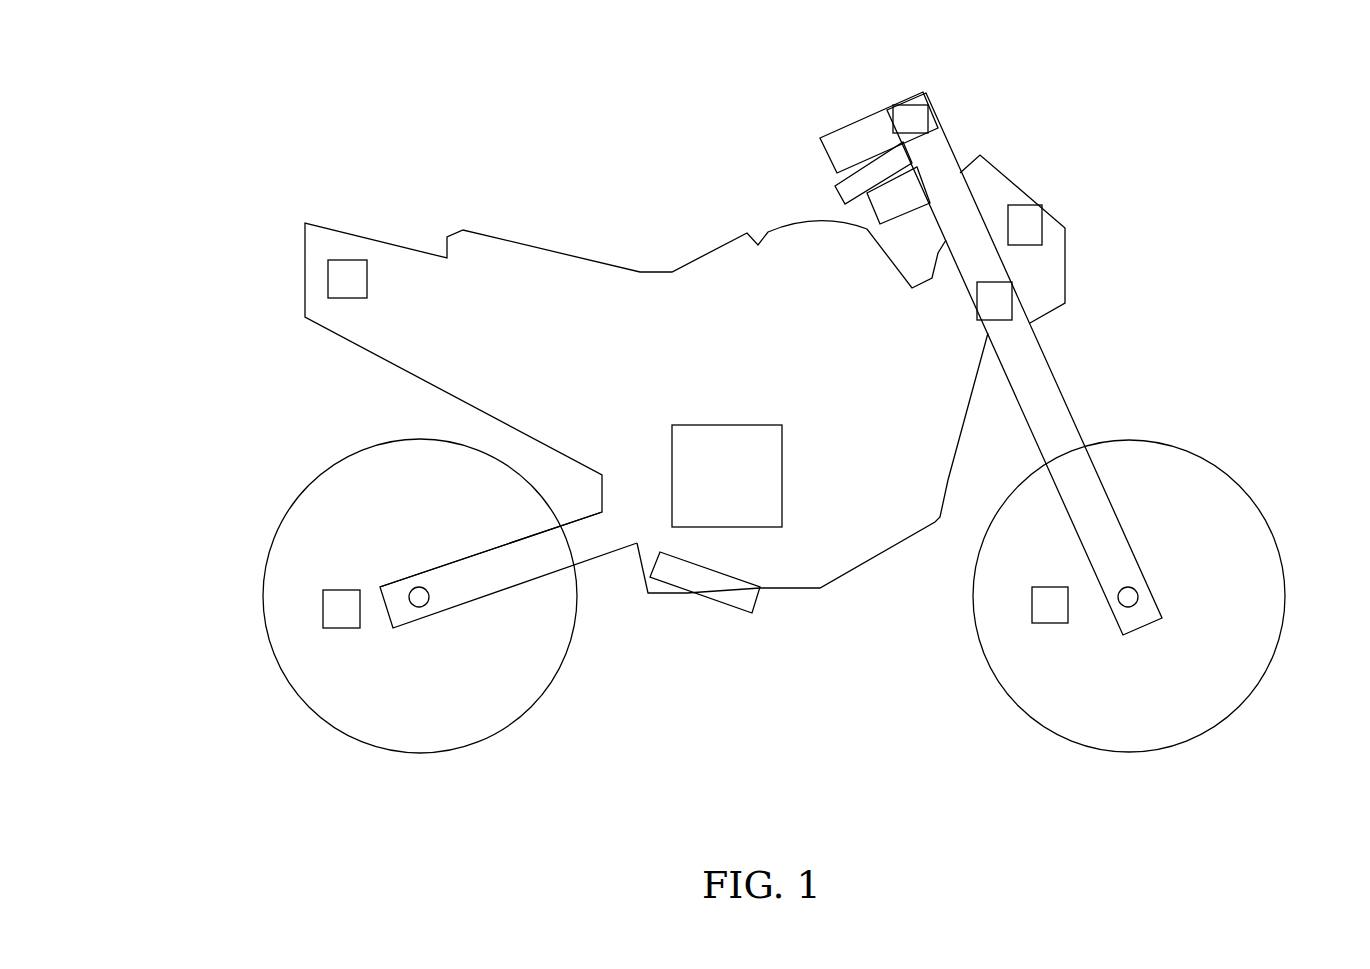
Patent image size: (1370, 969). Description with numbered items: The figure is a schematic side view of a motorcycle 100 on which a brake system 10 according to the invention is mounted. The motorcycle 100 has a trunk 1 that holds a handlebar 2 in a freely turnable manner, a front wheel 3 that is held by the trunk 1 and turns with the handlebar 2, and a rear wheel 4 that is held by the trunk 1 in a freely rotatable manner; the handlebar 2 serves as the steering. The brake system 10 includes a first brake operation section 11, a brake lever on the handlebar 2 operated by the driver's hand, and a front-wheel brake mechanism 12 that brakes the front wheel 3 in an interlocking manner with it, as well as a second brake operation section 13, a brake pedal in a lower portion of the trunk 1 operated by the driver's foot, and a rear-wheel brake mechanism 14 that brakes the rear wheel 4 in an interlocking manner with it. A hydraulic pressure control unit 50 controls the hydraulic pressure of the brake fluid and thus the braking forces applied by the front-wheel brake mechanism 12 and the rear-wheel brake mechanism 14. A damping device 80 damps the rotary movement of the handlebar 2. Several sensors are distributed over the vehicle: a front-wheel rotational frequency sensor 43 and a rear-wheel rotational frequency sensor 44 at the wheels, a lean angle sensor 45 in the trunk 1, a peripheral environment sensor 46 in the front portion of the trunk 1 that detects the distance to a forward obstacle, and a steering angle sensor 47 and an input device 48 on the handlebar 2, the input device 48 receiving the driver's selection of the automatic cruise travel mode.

The motorcycle 100 is at (288, 112).
The trunk 1 is at (557, 275).
The handlebar 2 is at (840, 147).
The front wheel 3 is at (1130, 770).
The rear wheel 4 is at (420, 770).
The brake system 10 is at (1106, 356).
The first brake operation section 11 is at (838, 193).
The front-wheel brake mechanism 12 is at (1172, 565).
The second brake operation section 13 is at (722, 590).
The rear-wheel brake mechanism 14 is at (373, 562).
The front-wheel rotational frequency sensor 43 is at (1042, 605).
The rear-wheel rotational frequency sensor 44 is at (340, 612).
The lean angle sensor 45 is at (348, 272).
The peripheral environment sensor 46 is at (1030, 225).
The steering angle sensor 47 is at (998, 295).
The input device 48 is at (910, 118).
The hydraulic pressure control unit 50 is at (690, 415).
The damping device 80 is at (935, 178).